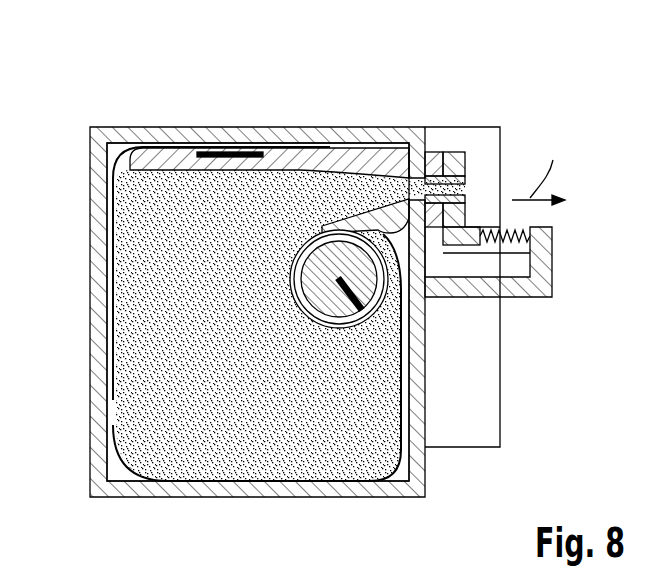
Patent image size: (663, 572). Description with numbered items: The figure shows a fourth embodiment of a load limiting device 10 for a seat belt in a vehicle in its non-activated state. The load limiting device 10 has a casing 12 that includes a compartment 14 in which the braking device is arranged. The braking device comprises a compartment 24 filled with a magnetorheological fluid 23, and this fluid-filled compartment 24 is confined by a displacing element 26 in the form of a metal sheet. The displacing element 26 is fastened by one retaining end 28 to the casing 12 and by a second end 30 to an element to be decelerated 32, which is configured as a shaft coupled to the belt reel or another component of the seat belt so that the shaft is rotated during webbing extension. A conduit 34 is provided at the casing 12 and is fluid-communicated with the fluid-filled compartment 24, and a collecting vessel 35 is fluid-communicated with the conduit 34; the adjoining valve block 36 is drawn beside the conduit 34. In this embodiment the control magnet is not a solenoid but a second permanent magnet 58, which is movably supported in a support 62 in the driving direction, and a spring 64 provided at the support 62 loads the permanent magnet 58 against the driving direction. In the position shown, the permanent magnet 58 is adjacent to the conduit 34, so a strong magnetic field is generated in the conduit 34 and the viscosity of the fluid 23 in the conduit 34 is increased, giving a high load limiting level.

The load limiting device 10 is at (327, 287).
The casing 12 is at (191, 113).
The compartment 14 is at (113, 152).
The magnetorheological fluid 23 is at (290, 365).
The compartment 24 is at (178, 460).
The displacing element 26 is at (113, 440).
The retaining end 28 is at (238, 152).
The second end 30 is at (343, 327).
The element to be decelerated 32 is at (317, 330).
The conduit 34 is at (467, 190).
The collecting vessel 35 is at (500, 402).
The valve body 36 is at (433, 152).
The second permanent magnet 58 is at (470, 228).
The support 62 is at (523, 297).
The spring 64 is at (516, 231).